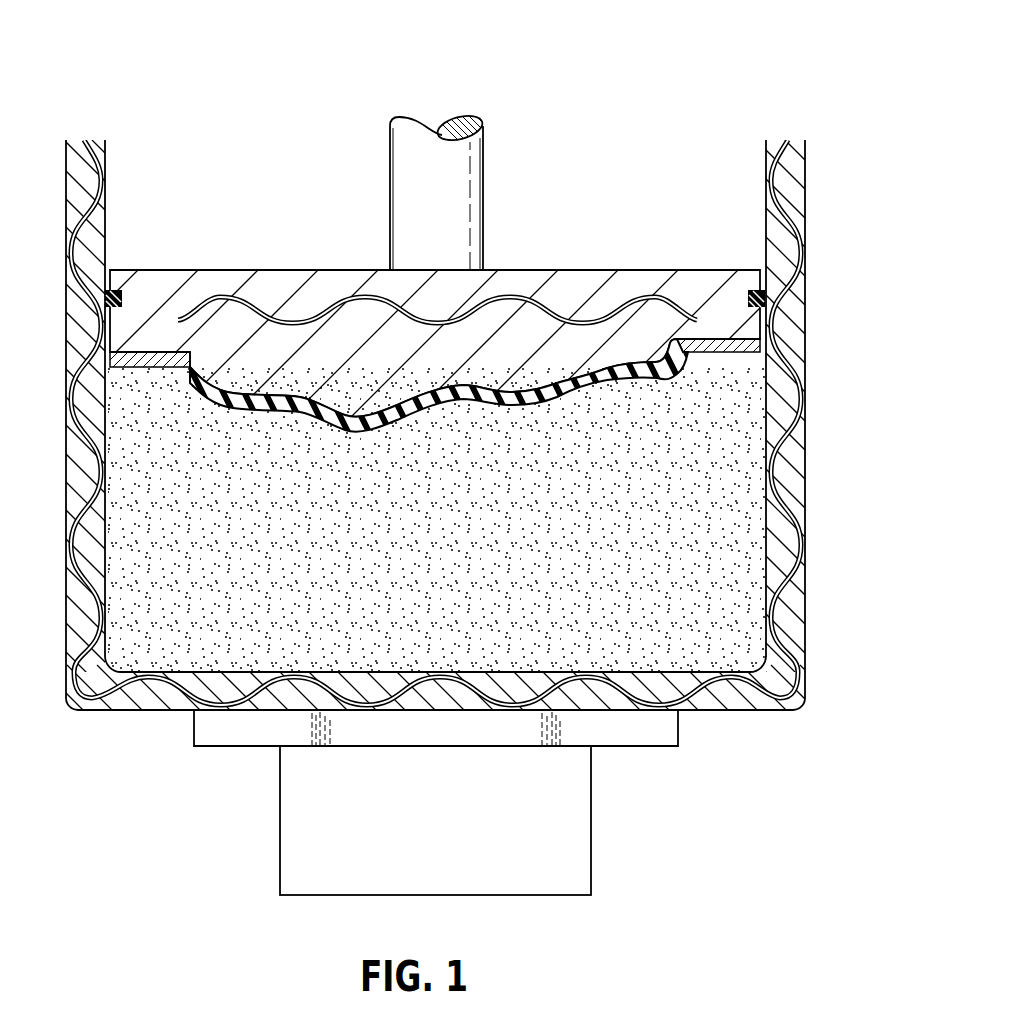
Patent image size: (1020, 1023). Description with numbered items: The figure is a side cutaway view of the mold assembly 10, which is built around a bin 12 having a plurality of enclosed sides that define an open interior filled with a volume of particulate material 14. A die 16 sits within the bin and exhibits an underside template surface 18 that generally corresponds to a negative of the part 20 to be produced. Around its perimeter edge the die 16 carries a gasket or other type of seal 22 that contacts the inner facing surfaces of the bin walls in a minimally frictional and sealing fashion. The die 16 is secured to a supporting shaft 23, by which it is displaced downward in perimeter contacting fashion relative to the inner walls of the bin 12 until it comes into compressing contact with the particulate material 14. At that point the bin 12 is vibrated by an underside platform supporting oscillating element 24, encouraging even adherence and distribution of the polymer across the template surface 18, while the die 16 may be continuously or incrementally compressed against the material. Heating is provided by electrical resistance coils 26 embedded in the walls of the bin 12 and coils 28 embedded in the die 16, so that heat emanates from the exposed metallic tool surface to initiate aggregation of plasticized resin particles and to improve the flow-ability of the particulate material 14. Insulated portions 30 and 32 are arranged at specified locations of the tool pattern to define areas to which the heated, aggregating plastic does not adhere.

The crucible assembly 10 is at (622, 90).
The bin 12 is at (805, 606).
The particulate material 14 is at (678, 605).
The die 16 is at (223, 268).
The template surface 18 is at (562, 382).
The part 20 is at (517, 390).
The seal 22 is at (753, 290).
The supporting shaft 23 is at (403, 187).
The oscillating element 24 is at (448, 832).
The electrical resistance coils 26 is at (792, 182).
The electrical resistance coils 28 is at (363, 297).
The insulated portion 30 is at (745, 358).
The insulated portion 32 is at (132, 366).